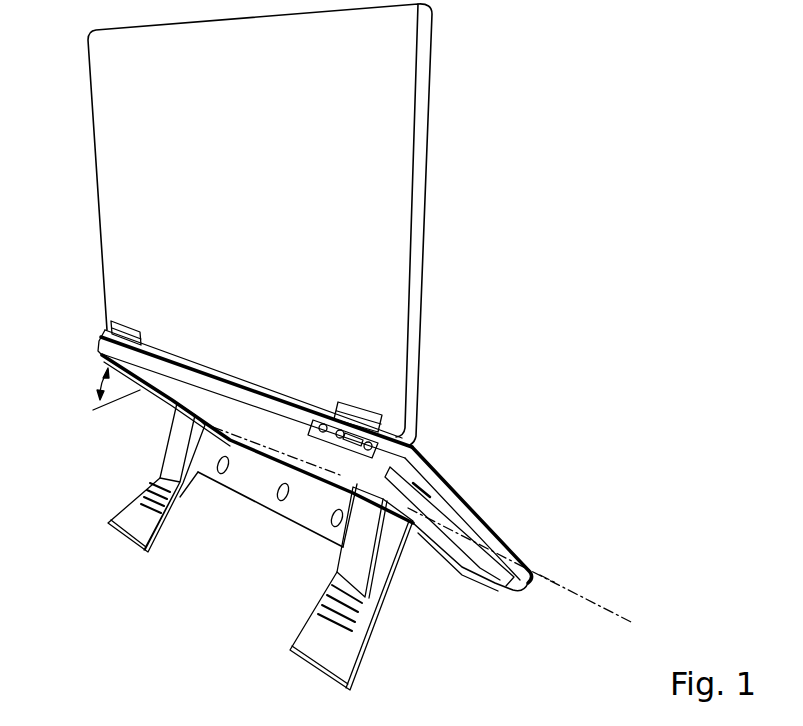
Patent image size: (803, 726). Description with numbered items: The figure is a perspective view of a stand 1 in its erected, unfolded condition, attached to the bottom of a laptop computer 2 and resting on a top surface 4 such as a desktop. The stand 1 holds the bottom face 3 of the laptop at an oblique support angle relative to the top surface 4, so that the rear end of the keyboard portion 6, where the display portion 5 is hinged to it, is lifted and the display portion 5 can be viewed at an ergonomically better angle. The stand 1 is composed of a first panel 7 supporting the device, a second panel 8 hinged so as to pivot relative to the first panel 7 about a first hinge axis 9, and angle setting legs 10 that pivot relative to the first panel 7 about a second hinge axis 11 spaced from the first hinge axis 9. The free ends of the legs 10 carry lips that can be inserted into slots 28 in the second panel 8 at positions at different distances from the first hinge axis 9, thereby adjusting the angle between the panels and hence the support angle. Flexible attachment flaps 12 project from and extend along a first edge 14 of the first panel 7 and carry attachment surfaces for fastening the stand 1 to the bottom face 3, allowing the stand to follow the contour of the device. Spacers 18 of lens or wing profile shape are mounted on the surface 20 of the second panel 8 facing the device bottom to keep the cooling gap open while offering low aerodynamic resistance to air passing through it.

The stand 1 is at (113, 431).
The laptop computer 2 is at (462, 213).
The bottom face 3 is at (289, 454).
The top surface 4 is at (475, 644).
The display portion 5 is at (258, 147).
The keyboard portion 6 is at (437, 470).
The first panel 7 is at (433, 546).
The second panel 8 is at (306, 540).
The first hinge axis 9 is at (627, 620).
The angle setting legs 10 is at (164, 463).
The second hinge axis 11 is at (550, 572).
The flexible attachment flaps 12 is at (446, 504).
The first edge 14 is at (415, 494).
The spacers 18 is at (331, 519).
The surface of the second panel 20 is at (265, 483).
The slots 28 is at (145, 492).